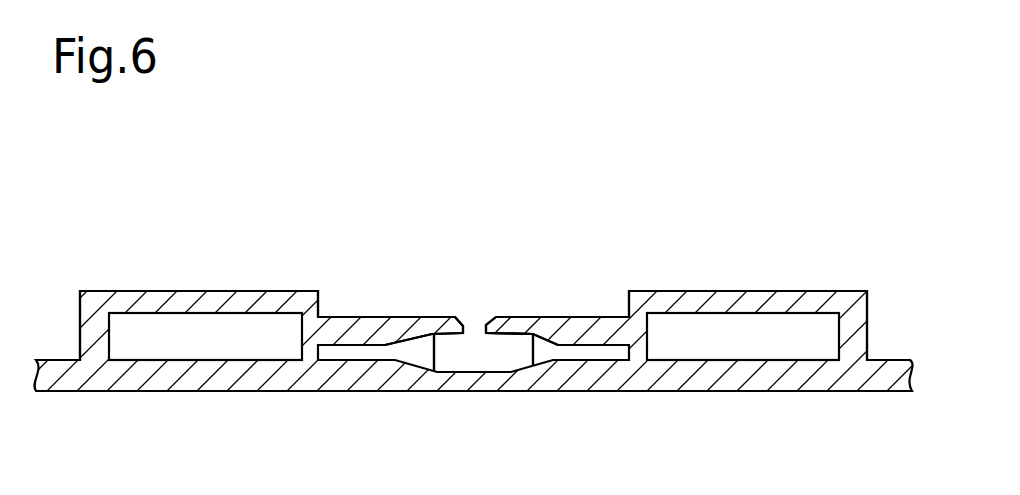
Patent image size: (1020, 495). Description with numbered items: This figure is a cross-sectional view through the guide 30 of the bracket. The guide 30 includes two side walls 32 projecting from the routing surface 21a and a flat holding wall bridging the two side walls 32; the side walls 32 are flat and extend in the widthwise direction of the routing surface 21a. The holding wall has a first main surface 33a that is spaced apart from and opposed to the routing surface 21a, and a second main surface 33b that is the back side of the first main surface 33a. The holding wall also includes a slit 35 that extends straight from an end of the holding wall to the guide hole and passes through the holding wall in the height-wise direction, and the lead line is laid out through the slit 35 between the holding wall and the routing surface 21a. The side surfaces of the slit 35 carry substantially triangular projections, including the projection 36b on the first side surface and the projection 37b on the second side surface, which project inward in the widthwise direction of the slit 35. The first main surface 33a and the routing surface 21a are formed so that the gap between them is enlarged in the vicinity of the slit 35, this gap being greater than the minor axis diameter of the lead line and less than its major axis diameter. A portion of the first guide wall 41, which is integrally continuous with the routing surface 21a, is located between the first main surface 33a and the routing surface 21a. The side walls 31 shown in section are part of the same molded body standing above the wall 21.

The first wall 21 is at (672, 382).
The routing surface 21a is at (503, 364).
The guide 30 is at (565, 317).
The side wall portion 31 is at (153, 291).
The side wall 32 is at (302, 333).
The first main surface 33a is at (425, 337).
The second main surface 33b is at (370, 317).
The slit 35 is at (490, 318).
The projection 36b is at (462, 318).
The projection 37b is at (483, 318).
The first guide wall 41 is at (436, 363).